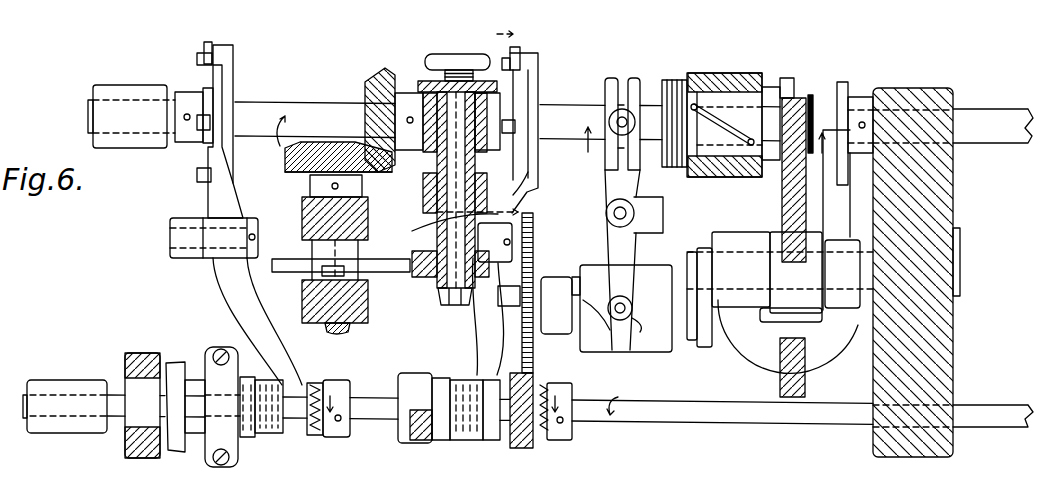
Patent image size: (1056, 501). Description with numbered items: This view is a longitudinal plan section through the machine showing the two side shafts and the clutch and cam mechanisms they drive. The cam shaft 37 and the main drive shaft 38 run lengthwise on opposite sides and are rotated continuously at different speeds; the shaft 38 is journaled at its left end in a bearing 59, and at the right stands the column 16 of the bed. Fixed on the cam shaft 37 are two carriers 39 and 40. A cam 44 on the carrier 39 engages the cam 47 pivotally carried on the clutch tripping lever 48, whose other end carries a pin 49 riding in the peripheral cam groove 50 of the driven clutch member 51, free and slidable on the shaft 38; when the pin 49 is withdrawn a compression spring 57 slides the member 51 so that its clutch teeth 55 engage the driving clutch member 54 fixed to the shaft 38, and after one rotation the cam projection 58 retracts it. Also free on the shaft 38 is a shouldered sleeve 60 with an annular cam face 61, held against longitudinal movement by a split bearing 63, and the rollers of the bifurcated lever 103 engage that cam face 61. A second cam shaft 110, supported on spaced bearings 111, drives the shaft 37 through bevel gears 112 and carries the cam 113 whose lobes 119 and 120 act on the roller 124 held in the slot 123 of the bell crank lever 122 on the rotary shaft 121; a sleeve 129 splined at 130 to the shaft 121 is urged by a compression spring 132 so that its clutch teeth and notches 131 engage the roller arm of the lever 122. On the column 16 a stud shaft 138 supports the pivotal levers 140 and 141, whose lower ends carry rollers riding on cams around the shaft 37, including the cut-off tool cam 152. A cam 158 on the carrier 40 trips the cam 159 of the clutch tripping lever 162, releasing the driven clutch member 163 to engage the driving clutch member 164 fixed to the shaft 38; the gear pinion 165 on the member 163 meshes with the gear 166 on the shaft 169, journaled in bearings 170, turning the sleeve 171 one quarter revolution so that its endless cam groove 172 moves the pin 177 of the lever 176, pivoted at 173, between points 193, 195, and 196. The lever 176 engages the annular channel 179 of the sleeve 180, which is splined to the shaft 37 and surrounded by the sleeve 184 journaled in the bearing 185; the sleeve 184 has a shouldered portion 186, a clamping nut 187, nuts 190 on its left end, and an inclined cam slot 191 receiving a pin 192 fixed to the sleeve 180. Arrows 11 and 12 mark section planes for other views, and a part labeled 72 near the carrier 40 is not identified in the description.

The direction arrow 11 is at (709, 151).
The rack / direction arrow 12 is at (486, 282).
The column 16 is at (897, 90).
The cam shaft 37 is at (303, 110).
The main drive shaft 38 is at (375, 412).
The carrier 39 is at (240, 47).
The carrier 40 is at (540, 60).
The cam 44 is at (205, 53).
The cam 47 is at (200, 118).
The clutch tripping lever 48 is at (208, 183).
The pin 49 is at (288, 453).
The peripheral cam groove 50 is at (340, 333).
The driven clutch member 51 is at (308, 378).
The driving clutch member 54 is at (343, 380).
The clutch teeth 55 is at (320, 435).
The compression spring 57 is at (260, 440).
The cam projection 58 is at (270, 443).
The bearing 59 is at (44, 383).
The shouldered sleeve 60 is at (198, 433).
The annular cam face 61 is at (166, 383).
The bearing 63 is at (215, 350).
The tab 72 is at (512, 62).
The bifurcated lever 103 is at (142, 353).
The cam shaft 110 is at (352, 330).
The bearings 111 is at (302, 206).
The bevel gears 112 is at (315, 147).
The cam 113 is at (293, 267).
The lobe 119 is at (262, 262).
The lobe 120 is at (293, 259).
The rotary shaft 121 is at (455, 305).
The bell crank lever 122 is at (446, 190).
The slot 123 is at (355, 272).
The roller 124 is at (340, 246).
The sleeve 129 is at (438, 152).
The spline 130 is at (530, 225).
The clutch teeth and notches 131 is at (515, 245).
The compression spring 132 is at (436, 84).
The stud shaft 138 is at (960, 268).
The pivotal lever 140 is at (820, 220).
The pivotal lever 141 is at (805, 355).
The cut-off tool cam 152 is at (848, 182).
The cam 158 is at (508, 55).
The cam 159 is at (518, 127).
The clutch tripping lever 162 is at (531, 176).
The driven clutch member 163 is at (500, 442).
The driving clutch member 164 is at (568, 440).
The gear pinion 165 is at (524, 450).
The gear 166 is at (540, 362).
The shaft 169 is at (579, 338).
The bearings 170 is at (582, 332).
The sleeve 171 is at (640, 272).
The endless cam groove 172 is at (627, 308).
The pivot 173 is at (633, 215).
The lever 176 is at (664, 220).
The pin 177 is at (612, 324).
The annular channel 179 is at (612, 78).
The sleeve 180 is at (645, 102).
The sleeve 184 is at (738, 93).
The bearing 185 is at (792, 80).
The shouldered portion 186 is at (812, 84).
The nut 187 is at (812, 88).
The nuts 190 is at (670, 168).
The inclined cam slot 191 is at (712, 106).
The pin 192 is at (731, 177).
The point 193 is at (608, 300).
The point 195 is at (640, 352).
The point 196 is at (607, 298).